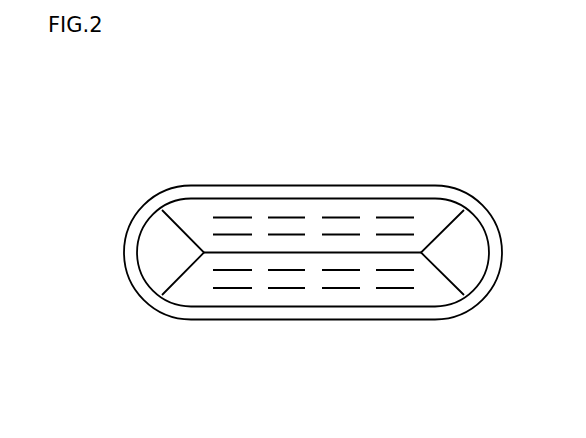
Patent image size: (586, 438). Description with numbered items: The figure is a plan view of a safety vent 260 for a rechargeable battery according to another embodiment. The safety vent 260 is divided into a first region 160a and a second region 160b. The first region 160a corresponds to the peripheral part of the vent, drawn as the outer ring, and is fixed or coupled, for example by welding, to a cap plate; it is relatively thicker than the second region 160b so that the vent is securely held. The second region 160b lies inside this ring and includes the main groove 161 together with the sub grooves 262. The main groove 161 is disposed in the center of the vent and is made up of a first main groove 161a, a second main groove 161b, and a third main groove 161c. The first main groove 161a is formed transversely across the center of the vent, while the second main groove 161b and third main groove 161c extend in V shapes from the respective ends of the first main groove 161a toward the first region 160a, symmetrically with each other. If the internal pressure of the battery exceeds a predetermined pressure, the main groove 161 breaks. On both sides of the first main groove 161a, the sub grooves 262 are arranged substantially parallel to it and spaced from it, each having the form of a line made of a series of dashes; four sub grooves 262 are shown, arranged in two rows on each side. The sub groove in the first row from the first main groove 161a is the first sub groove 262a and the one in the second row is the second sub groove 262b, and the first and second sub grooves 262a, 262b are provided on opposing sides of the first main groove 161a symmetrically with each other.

The safety vent 260 is at (69, 128).
The first region 160a is at (361, 193).
The second region 160b is at (439, 212).
The main groove 161 is at (437, 373).
The first main groove 161a is at (335, 255).
The second main groove 161b is at (187, 270).
The third main groove 161c is at (438, 272).
The sub groove 262 is at (323, 130).
The first sub groove 262a is at (272, 235).
The second sub groove 262b is at (302, 217).